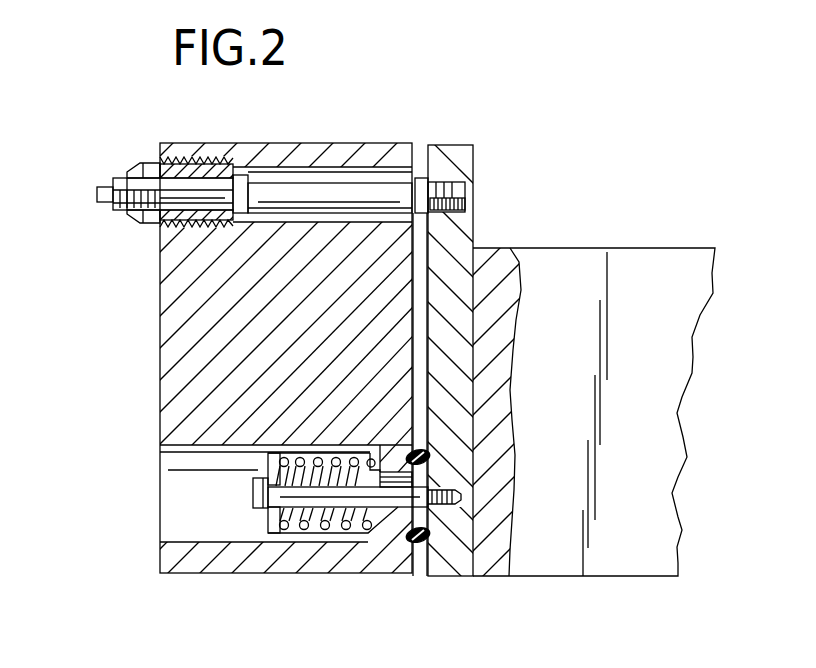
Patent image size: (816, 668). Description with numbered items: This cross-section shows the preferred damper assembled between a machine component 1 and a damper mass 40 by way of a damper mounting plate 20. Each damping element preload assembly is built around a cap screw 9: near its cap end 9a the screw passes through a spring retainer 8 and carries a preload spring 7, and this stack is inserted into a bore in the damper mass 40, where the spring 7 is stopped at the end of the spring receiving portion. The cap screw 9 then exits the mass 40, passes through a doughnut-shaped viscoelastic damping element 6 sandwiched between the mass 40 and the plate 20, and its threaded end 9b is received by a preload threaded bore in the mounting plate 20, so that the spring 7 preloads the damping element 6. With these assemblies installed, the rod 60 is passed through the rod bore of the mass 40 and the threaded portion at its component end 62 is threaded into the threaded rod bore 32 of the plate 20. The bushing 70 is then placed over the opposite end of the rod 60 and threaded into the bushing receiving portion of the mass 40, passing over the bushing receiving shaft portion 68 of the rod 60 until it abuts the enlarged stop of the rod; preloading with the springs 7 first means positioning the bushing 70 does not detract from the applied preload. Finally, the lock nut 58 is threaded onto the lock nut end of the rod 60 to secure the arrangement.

The machine component 1 is at (633, 245).
The damper mounting plate 20 is at (455, 142).
The damper mass 40 is at (293, 141).
The rod 60 is at (356, 177).
The lock nut 58 is at (137, 178).
The bushing receiving shaft portion 68 is at (190, 190).
The bushing 70 is at (160, 223).
The component end 62 is at (460, 190).
The threaded rod bore 32 is at (455, 213).
The preload spring 7 is at (352, 456).
The viscoelastic damping element 6 is at (418, 546).
The spring retainer 8 is at (268, 522).
The cap screw 9 is at (248, 482).
The cap end 9a is at (257, 497).
The threaded end 9b is at (462, 493).